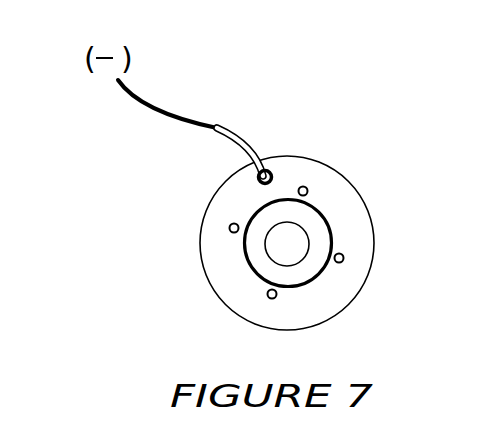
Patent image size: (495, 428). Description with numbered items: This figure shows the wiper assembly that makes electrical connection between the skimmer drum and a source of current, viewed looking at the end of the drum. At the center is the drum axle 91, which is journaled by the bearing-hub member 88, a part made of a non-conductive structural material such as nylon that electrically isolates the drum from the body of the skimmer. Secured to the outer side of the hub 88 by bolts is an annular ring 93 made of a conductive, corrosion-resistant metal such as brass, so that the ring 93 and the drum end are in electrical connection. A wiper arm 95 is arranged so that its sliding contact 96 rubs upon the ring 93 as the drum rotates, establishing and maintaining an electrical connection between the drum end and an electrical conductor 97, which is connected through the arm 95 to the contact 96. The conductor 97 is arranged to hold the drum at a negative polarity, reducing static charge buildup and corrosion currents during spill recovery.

The bearing-hub member 88 is at (302, 273).
The drum axle 91 is at (280, 248).
The annular ring 93 is at (328, 180).
The wiper arm 95 is at (242, 135).
The sliding contact 96 is at (258, 181).
The electrical conductor 97 is at (167, 108).